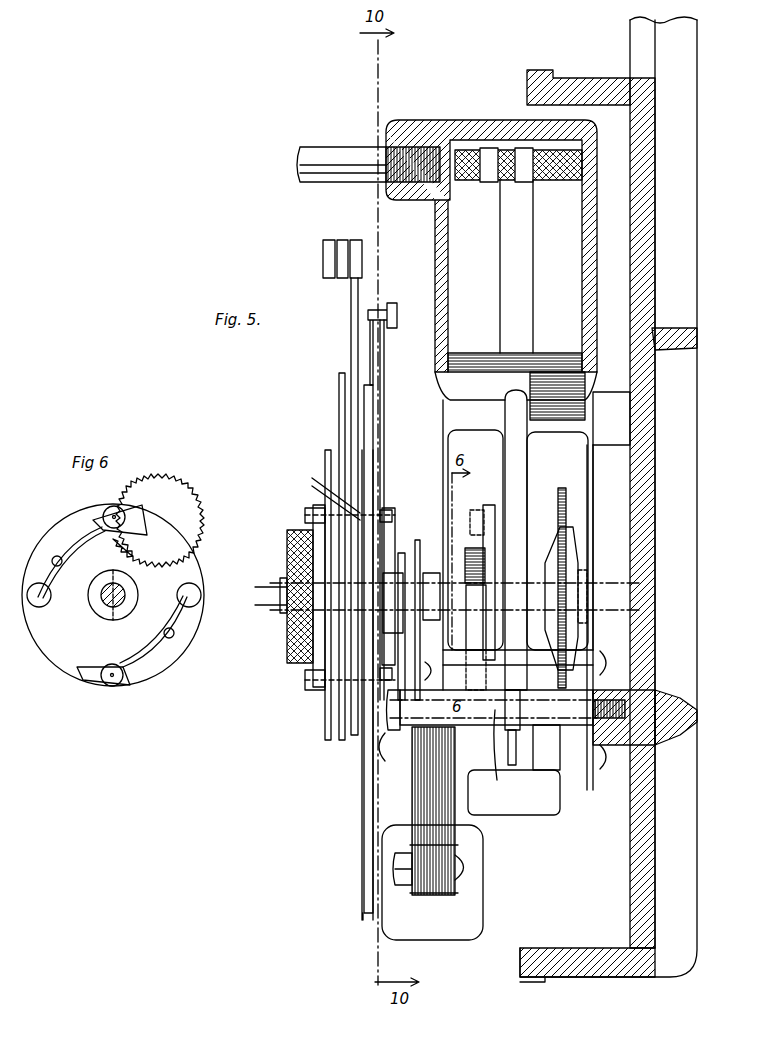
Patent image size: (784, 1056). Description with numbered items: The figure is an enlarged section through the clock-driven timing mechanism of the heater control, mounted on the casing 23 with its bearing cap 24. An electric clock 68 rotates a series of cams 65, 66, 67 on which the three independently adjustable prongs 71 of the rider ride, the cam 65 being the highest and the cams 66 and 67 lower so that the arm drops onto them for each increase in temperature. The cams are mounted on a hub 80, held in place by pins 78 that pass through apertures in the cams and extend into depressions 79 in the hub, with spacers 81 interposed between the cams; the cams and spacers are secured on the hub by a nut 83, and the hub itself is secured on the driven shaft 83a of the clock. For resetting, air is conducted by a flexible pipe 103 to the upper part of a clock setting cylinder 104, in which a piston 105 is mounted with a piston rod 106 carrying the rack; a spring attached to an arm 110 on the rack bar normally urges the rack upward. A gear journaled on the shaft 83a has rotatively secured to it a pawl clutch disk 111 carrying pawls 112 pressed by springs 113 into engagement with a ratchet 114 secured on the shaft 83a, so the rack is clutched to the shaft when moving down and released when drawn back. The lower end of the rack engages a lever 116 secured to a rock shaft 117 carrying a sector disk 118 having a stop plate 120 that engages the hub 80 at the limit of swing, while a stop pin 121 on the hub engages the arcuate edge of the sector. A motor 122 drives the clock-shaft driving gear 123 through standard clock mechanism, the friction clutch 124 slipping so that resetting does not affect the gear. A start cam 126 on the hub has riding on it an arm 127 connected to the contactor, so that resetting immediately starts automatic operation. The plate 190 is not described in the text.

In FIG. 5, the casing 23 is at (596, 82).
In FIG. 5, the bearing cap 24 is at (487, 160).
In FIG. 5, the cam 65 is at (356, 302).
In FIG. 5, the cam 66 is at (338, 412).
In FIG. 5, the cam 67 is at (328, 450).
In FIG. 5, the electric clock 68 is at (535, 650).
In FIG. 5, the prongs 71 is at (356, 240).
In FIG. 5, the pins 78 is at (305, 515).
In FIG. 5, the depressions 79 is at (388, 508).
In FIG. 5, the hub 80 is at (390, 522).
In FIG. 5, the spacers 81 is at (312, 480).
In FIG. 5, the nut 83 is at (288, 556).
In FIG. 5, the driven shaft 83a is at (283, 612).
In FIG. 5, the flexible pipe 103 is at (330, 158).
In FIG. 5, the clock setting cylinder 104 is at (440, 284).
In FIG. 5, the piston 105 is at (536, 182).
In FIG. 5, the piston rod 106 is at (528, 272).
In FIG. 5, the arm 110 is at (520, 760).
In FIG. 5, the pawl clutch disk 111 is at (492, 500).
In FIG. 6, the pawl clutch disk 111 is at (163, 540).
In FIG. 5, the pawls 112 is at (472, 522).
In FIG. 6, the pawls 112 is at (138, 518).
In FIG. 5, the springs 113 is at (478, 634).
In FIG. 6, the springs 113 is at (55, 545).
In FIG. 5, the ratchet 114 is at (470, 566).
In FIG. 6, the ratchet 114 is at (178, 560).
In FIG. 5, the lever 116 is at (515, 712).
In FIG. 5, the rock shaft 117 is at (497, 778).
In FIG. 5, the sector disk 118 is at (395, 662).
In FIG. 5, the stop plate 120 is at (428, 600).
In FIG. 5, the stop pin 121 is at (420, 570).
In FIG. 5, the motor 122 is at (440, 830).
In FIG. 5, the clock-shaft driving gear 123 is at (566, 495).
In FIG. 5, the friction clutch 124 is at (548, 560).
In FIG. 5, the start cam 126 is at (385, 352).
In FIG. 5, the arm 127 is at (392, 310).
In FIG. 5, the plate 190 is at (376, 402).